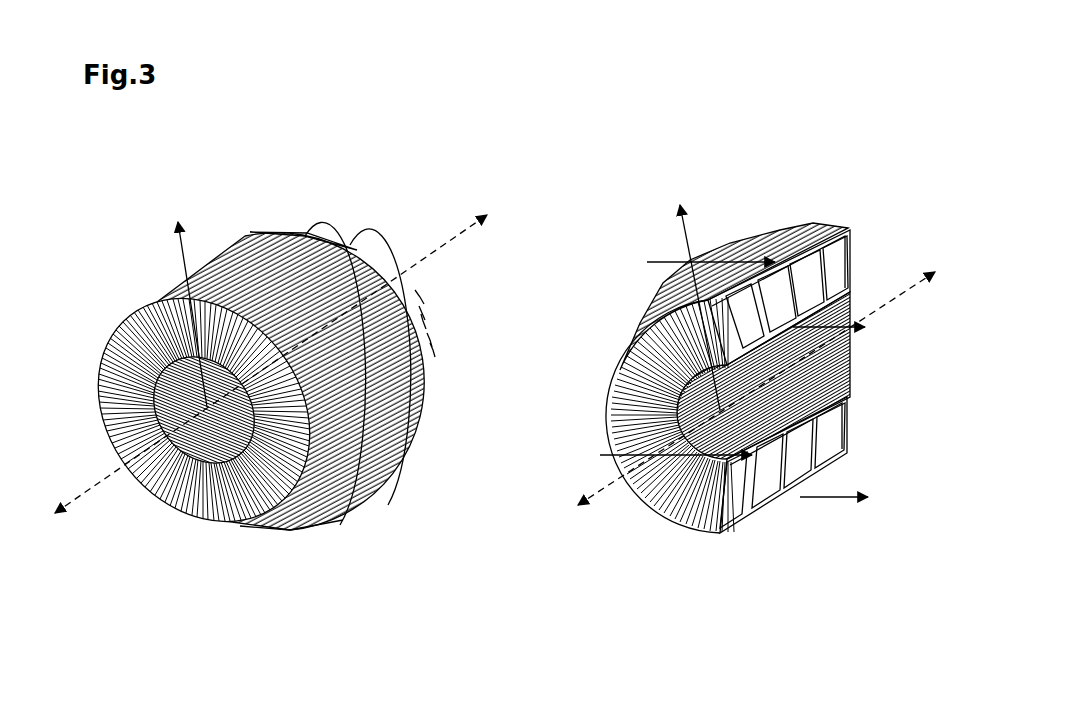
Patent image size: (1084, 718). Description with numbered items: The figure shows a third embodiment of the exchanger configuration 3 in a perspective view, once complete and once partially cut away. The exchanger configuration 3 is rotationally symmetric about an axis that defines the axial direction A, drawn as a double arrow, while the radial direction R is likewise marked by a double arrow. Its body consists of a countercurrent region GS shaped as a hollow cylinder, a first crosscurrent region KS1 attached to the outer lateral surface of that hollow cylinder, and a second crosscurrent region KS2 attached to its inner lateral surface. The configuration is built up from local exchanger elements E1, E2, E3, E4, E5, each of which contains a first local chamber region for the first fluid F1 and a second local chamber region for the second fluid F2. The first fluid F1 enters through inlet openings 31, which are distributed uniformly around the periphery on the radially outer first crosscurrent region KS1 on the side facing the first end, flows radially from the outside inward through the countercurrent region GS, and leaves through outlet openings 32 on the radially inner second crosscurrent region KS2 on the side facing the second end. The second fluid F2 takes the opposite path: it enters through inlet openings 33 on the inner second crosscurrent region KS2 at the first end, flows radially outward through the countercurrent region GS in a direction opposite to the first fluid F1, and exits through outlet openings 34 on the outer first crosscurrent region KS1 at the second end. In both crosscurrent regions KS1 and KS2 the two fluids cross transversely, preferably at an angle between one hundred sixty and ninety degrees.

The exchanger configuration 3 is at (255, 550).
The inlet openings 31 is at (263, 287).
The outlet openings 32 is at (793, 342).
The inlet openings 33 is at (175, 415).
The outlet openings 34 is at (342, 253).
The first crosscurrent region KS1 is at (297, 240).
The second crosscurrent region KS2 is at (210, 447).
The countercurrent region GS is at (833, 267).
The local exchanger element E1 is at (420, 297).
The local exchanger element E2 is at (422, 313).
The local exchanger element E3 is at (423, 320).
The local exchanger element E4 is at (430, 340).
The local exchanger element E5 is at (433, 350).
The radial direction R is at (449, 297).
The axial direction A is at (495, 355).
The first fluid F1 is at (764, 281).
The second fluid F2 is at (727, 480).